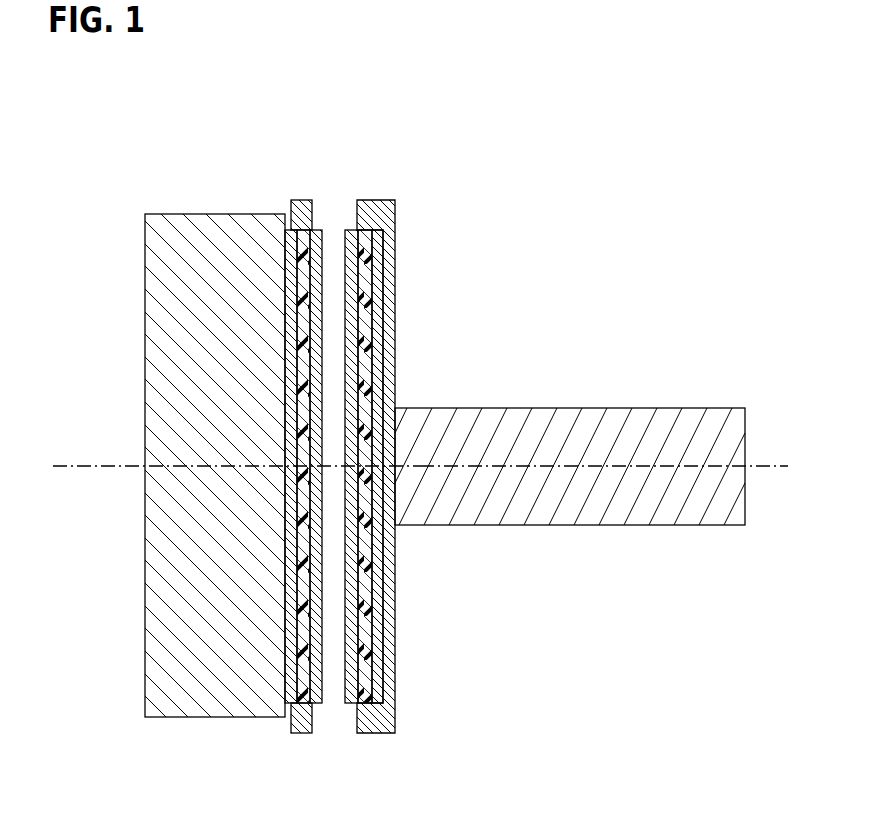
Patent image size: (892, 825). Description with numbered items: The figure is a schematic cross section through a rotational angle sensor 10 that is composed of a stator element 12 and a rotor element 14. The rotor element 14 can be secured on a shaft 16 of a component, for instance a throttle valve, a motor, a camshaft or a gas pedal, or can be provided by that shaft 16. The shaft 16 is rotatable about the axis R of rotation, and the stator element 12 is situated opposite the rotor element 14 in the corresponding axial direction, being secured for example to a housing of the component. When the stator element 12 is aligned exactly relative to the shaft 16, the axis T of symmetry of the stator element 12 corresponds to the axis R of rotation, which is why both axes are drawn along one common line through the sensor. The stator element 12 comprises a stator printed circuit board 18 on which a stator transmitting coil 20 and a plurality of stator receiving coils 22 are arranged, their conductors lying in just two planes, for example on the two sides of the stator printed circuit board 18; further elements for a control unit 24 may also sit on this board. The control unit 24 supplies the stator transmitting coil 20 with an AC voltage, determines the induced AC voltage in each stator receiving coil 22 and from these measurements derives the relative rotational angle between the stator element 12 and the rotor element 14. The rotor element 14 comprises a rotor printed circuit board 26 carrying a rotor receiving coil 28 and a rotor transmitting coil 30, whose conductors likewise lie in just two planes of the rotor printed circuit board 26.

The rotational angle sensor 10 is at (424, 427).
The stator element 12 is at (215, 420).
The rotor element 14 is at (421, 445).
The shaft 16 is at (570, 495).
The stator printed circuit board 18 is at (303, 338).
The stator transmitting coil 20 is at (322, 255).
The stator receiving coils 22 is at (287, 250).
The control unit 24 is at (193, 635).
The rotor printed circuit board 26 is at (362, 333).
The rotor receiving coil 28 is at (387, 675).
The rotor transmitting coil 30 is at (343, 660).
The axis of symmetry T is at (95, 468).
The axis of rotation R is at (780, 468).